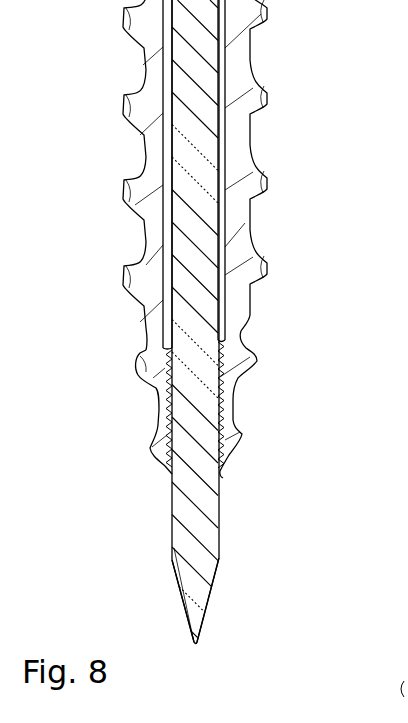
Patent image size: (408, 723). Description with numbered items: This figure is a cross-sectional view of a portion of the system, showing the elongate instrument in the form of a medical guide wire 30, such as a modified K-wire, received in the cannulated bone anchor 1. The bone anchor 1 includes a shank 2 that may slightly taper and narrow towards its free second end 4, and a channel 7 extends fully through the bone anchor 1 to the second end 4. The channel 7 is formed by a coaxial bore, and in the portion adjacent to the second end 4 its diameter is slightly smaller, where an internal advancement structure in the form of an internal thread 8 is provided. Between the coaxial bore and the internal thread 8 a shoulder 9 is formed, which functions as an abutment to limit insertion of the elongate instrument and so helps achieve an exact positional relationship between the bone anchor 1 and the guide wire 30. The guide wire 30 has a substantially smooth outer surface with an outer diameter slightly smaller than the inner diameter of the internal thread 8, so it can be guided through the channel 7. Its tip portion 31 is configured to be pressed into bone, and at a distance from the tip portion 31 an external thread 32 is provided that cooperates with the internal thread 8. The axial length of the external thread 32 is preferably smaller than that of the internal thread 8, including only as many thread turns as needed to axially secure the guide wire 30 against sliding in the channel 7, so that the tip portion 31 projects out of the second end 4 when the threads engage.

The bone anchor 1 is at (258, 55).
The shank 2 is at (143, 53).
The channel 7 is at (164, 137).
The medical guide wire 30 is at (204, 176).
The external thread 32 is at (164, 354).
The shoulder 9 is at (221, 340).
The internal thread 8 is at (158, 418).
The second end 4 is at (224, 470).
The tip portion 31 is at (209, 594).